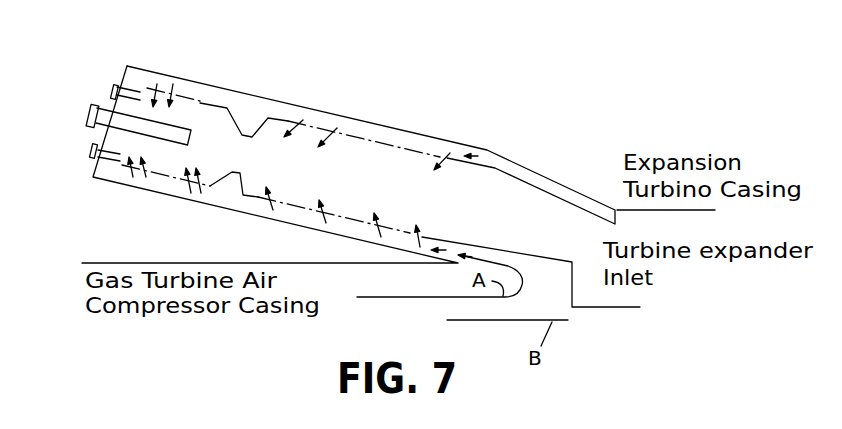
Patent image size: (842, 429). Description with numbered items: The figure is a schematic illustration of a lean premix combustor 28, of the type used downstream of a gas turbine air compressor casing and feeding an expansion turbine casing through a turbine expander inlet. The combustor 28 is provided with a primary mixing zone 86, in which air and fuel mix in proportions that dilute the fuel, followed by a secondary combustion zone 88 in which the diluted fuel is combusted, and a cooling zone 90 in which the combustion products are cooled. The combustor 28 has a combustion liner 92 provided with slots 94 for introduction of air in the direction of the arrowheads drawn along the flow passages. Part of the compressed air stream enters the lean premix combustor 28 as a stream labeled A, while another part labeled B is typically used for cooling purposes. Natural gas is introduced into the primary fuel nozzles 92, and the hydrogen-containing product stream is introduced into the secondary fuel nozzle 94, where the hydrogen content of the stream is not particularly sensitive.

The lean premix combustor 28 is at (481, 85).
The combustion liner 92 is at (111, 90).
The slots 94 is at (87, 112).
The primary mixing zone 86 is at (180, 170).
The secondary combustion zone 88 is at (253, 169).
The cooling zone 90 is at (392, 198).